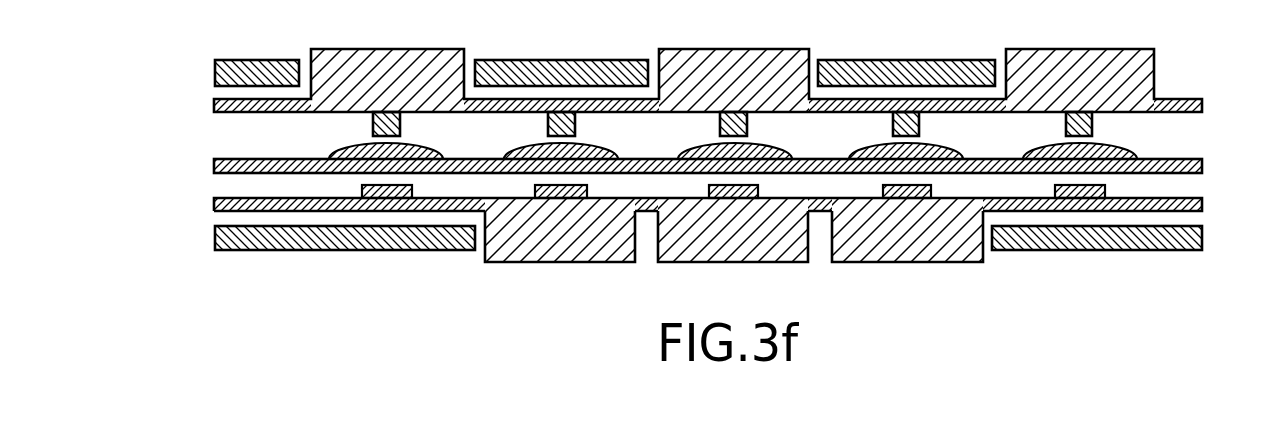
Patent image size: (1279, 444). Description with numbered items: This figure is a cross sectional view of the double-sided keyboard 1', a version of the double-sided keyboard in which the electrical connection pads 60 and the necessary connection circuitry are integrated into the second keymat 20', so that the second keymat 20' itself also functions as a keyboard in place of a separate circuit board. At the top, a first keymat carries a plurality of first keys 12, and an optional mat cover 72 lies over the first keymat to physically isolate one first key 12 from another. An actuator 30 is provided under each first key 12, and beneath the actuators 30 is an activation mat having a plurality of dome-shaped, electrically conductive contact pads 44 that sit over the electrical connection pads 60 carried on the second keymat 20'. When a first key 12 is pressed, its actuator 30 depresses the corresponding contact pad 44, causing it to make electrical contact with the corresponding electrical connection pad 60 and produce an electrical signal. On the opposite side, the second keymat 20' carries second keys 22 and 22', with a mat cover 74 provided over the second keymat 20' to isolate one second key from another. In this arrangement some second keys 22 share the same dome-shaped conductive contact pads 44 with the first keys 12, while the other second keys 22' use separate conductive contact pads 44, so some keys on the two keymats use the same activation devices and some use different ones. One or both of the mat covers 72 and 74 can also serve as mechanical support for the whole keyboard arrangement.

The double-sided keyboard 1' is at (125, 152).
The first key 12 is at (385, 49).
The mat cover 72 is at (595, 60).
The actuator 30 is at (372, 118).
The dome-shaped, electrically conductive contact pad 44 is at (427, 148).
The electrical connection pad 60 is at (387, 188).
The second keymat 20' is at (740, 197).
The second key 22 is at (733, 251).
The second key 22' is at (736, 251).
The mat cover 74 is at (270, 250).